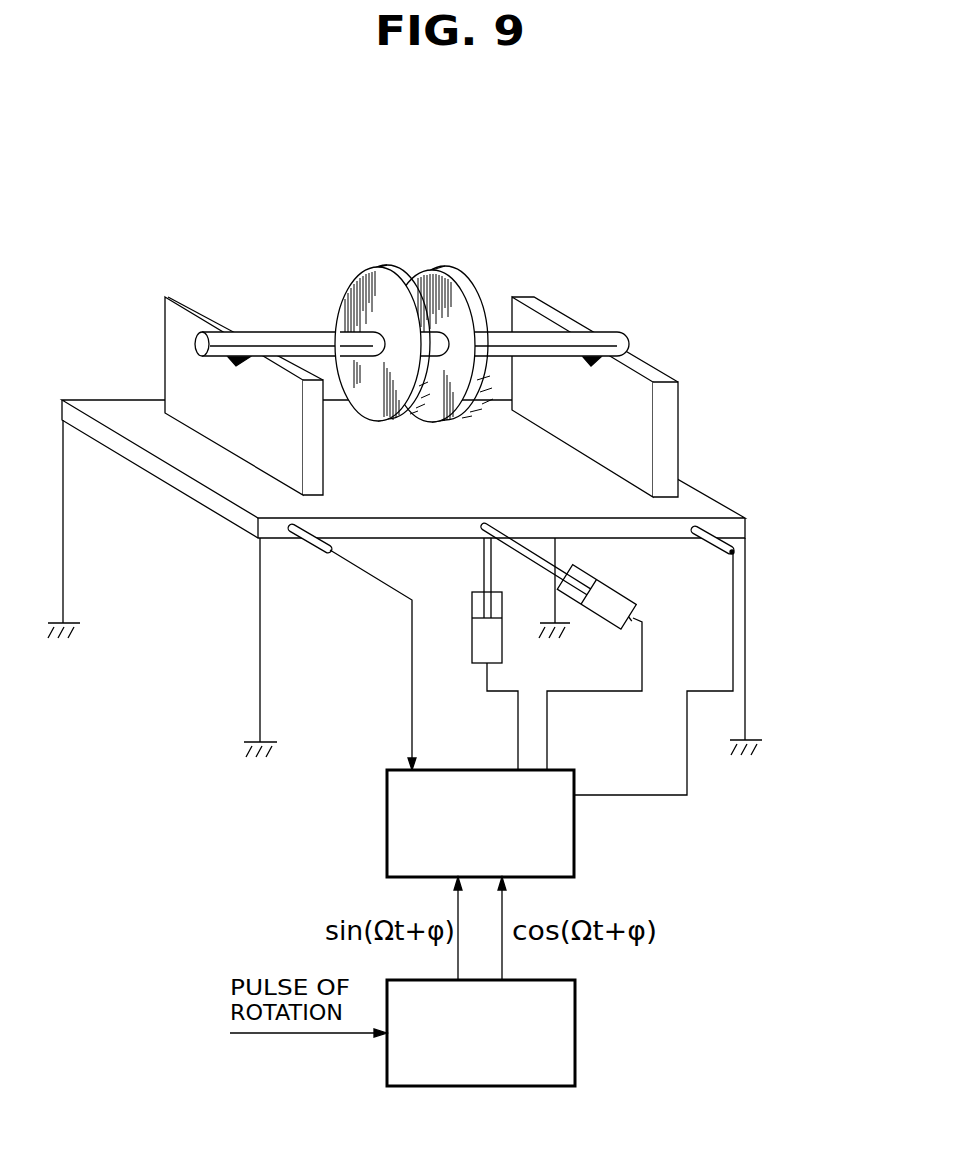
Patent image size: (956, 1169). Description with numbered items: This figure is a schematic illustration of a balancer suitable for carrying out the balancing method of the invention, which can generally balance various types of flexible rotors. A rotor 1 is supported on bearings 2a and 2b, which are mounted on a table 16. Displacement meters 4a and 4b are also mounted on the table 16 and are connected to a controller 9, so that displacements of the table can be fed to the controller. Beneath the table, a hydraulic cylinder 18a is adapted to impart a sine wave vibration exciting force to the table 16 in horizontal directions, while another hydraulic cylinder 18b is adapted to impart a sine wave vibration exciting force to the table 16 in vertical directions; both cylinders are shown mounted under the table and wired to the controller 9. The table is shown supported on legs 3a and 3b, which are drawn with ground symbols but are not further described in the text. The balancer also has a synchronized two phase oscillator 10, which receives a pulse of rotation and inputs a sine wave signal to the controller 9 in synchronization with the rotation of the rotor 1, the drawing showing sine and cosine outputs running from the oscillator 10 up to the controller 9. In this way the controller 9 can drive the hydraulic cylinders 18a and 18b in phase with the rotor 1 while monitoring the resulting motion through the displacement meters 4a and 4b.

The rotor 1 is at (457, 268).
The bearing 2a is at (667, 381).
The bearing 2b is at (183, 297).
The right support leg 3a is at (748, 683).
The left support leg 3b is at (258, 672).
The displacement meter 4a is at (312, 548).
The displacement meter 4b is at (708, 548).
The controller 9 is at (575, 770).
The synchronized two phase oscillator 10 is at (577, 998).
The table 16 is at (713, 498).
The hydraulic cylinder 18a is at (637, 606).
The hydraulic cylinder 18b is at (472, 651).